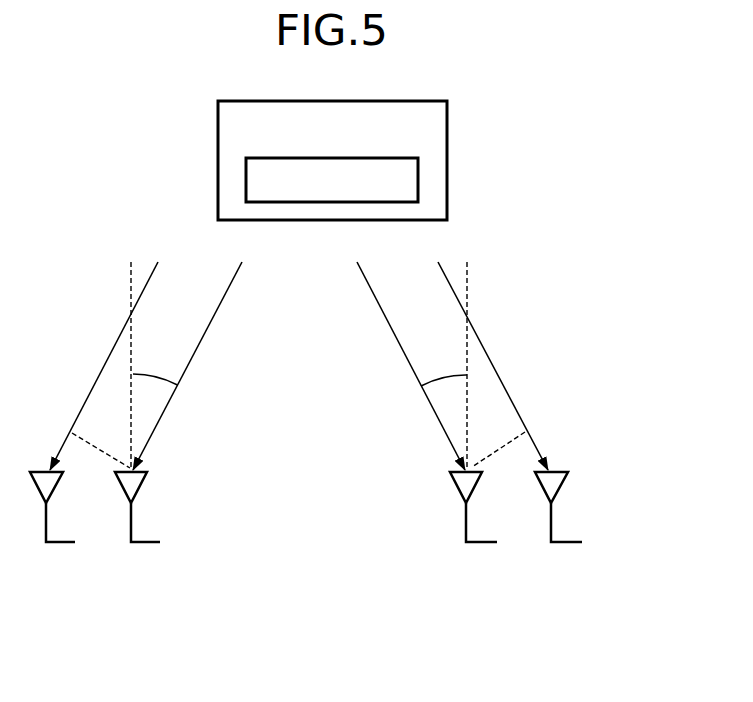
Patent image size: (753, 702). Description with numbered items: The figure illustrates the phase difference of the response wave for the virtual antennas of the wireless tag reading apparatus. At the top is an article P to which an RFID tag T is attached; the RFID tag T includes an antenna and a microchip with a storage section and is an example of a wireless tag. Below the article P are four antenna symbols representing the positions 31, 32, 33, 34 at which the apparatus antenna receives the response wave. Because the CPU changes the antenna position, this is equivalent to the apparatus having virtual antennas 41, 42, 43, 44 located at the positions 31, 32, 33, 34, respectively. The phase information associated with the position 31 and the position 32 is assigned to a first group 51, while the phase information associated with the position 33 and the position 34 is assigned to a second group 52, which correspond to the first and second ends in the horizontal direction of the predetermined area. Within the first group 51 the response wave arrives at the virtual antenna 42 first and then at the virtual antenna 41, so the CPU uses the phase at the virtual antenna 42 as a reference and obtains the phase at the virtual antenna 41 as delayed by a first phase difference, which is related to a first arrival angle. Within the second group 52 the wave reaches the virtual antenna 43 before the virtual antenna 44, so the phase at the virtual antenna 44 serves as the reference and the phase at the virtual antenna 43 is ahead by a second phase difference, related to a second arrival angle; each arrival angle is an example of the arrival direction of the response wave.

The article P is at (355, 139).
The RFID tag T is at (413, 158).
The position 31 is at (90, 548).
The virtual antenna 41 is at (60, 492).
The position 32 is at (171, 548).
The virtual antenna 42 is at (142, 492).
The position 33 is at (509, 548).
The virtual antenna 43 is at (478, 492).
The position 34 is at (588, 548).
The virtual antenna 44 is at (563, 492).
The first group 51 is at (130, 574).
The second group 52 is at (548, 574).